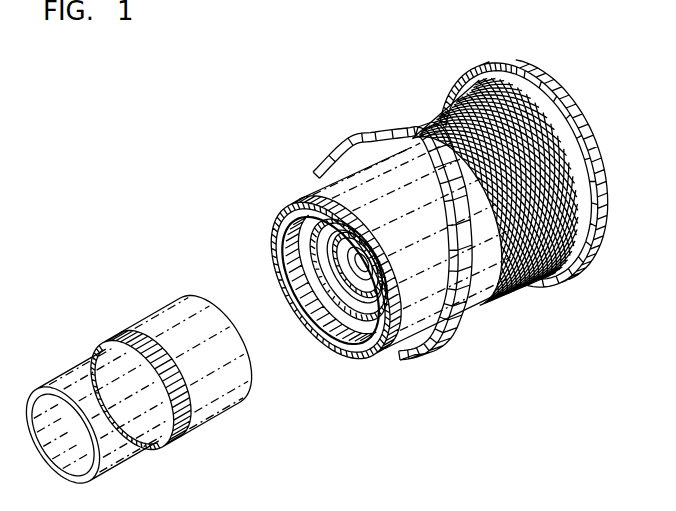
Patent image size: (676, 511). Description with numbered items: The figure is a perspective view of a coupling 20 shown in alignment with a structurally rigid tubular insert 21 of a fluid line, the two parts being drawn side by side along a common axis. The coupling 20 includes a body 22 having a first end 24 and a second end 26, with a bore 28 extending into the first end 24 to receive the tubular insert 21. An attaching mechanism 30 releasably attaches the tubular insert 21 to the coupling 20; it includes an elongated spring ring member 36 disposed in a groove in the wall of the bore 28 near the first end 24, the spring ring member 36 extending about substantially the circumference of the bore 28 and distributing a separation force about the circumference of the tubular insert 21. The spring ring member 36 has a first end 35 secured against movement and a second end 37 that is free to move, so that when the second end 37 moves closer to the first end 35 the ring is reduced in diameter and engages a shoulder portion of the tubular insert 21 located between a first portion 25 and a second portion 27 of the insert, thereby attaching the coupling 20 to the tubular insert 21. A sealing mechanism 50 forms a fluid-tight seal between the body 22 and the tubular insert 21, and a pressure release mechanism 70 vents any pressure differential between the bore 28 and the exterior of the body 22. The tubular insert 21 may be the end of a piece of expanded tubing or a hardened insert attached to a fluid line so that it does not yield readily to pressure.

The coupling 20 is at (203, 154).
The tubular insert 21 is at (188, 388).
The body 22 is at (600, 273).
The first end 24 is at (358, 347).
The first portion 25 is at (166, 333).
The second end 26 is at (598, 242).
The second portion 27 is at (121, 438).
The bore 28 is at (340, 283).
The attaching mechanism 30 is at (334, 128).
The first end 35 is at (350, 268).
The spring ring member 36 is at (314, 251).
The second end 37 is at (345, 314).
The sealing mechanism 50 is at (287, 252).
The pressure release mechanism 70 is at (400, 96).